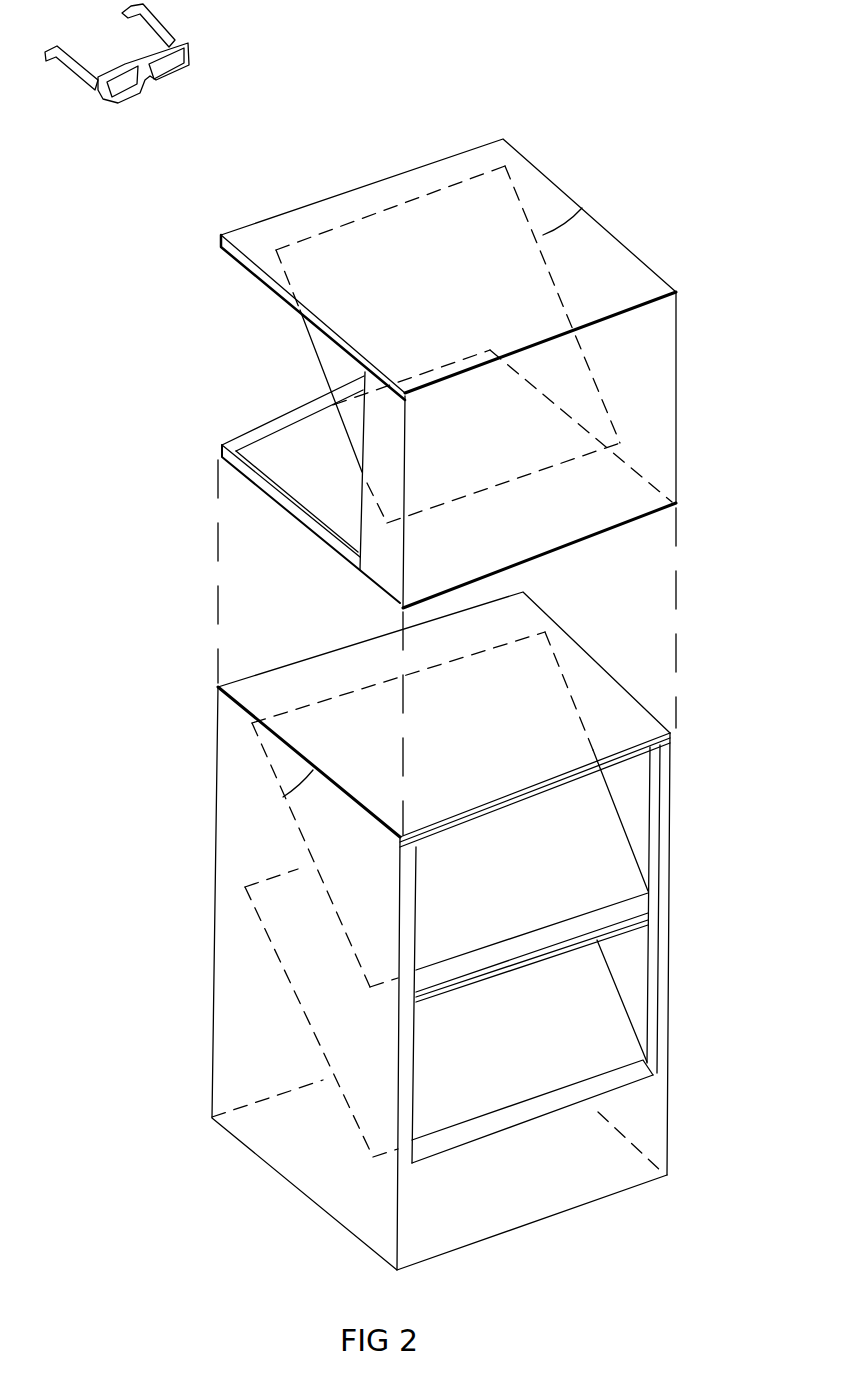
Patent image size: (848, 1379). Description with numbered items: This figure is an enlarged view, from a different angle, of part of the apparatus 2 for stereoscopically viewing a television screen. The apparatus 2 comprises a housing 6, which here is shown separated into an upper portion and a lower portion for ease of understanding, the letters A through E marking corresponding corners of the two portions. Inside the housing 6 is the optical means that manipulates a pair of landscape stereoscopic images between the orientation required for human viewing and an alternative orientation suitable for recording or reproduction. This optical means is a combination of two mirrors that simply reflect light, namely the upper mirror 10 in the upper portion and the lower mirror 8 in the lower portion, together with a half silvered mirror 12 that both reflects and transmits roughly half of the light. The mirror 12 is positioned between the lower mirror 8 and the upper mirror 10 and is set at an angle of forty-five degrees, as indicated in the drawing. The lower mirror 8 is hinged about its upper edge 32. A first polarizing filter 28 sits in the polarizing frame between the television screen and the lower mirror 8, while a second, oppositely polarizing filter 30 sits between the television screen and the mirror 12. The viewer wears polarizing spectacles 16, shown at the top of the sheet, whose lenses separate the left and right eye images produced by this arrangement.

The polarizing spectacles 16 is at (74, 60).
The apparatus 2 is at (617, 217).
The upper mirror 10 is at (330, 357).
The housing 6 is at (676, 777).
The half silvered mirror 12 is at (287, 757).
The lower mirror 8 is at (352, 1023).
The upper edge 32 is at (287, 873).
The second polarizing filter 30 is at (575, 851).
The first polarizing filter 28 is at (596, 1043).